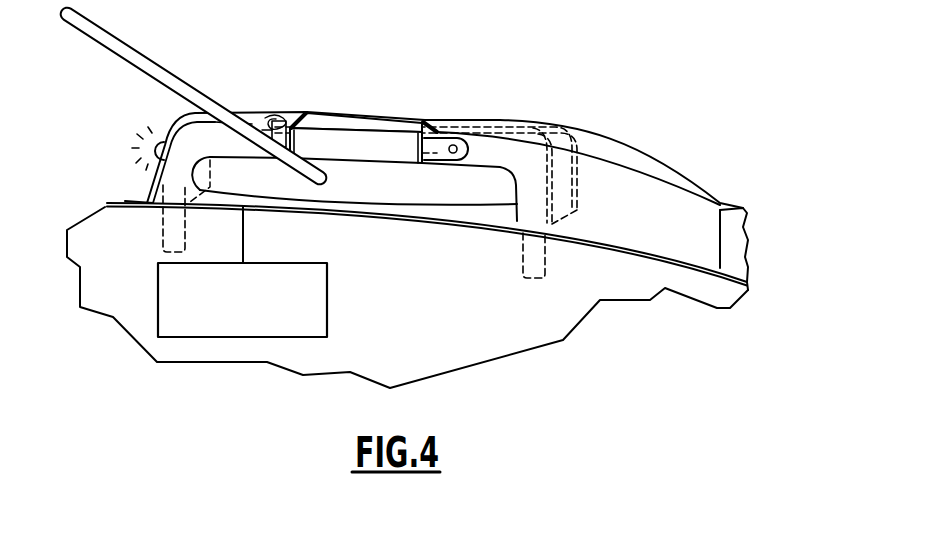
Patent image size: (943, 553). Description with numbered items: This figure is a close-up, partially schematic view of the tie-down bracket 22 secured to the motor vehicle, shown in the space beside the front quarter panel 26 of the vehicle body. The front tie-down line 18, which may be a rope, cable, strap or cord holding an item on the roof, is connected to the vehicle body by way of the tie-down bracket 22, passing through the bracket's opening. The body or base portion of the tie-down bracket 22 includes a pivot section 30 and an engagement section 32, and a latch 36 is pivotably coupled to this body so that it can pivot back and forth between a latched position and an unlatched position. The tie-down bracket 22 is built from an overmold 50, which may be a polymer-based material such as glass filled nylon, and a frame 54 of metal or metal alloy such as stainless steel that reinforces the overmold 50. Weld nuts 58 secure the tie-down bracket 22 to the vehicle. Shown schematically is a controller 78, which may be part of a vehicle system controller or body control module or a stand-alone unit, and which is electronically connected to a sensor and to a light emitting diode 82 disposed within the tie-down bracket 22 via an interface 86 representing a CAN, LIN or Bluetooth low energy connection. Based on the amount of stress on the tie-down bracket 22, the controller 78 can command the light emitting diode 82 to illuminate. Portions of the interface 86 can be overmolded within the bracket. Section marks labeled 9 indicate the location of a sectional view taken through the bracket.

The section line 9- 9 is at (7, 161).
The front tie-down line 18 is at (135, 50).
The tie-down bracket 22 is at (716, 153).
The front quarter panel 26 is at (364, 325).
The pivot section 30 is at (632, 156).
The engagement section 32 is at (262, 113).
The latch 36 is at (348, 111).
The overmold 50 is at (592, 128).
The frame 54 is at (387, 136).
The weld nuts 58 is at (163, 238).
The controller 78 is at (228, 328).
The light emitting diode 82 is at (134, 157).
The interface 86 is at (244, 240).